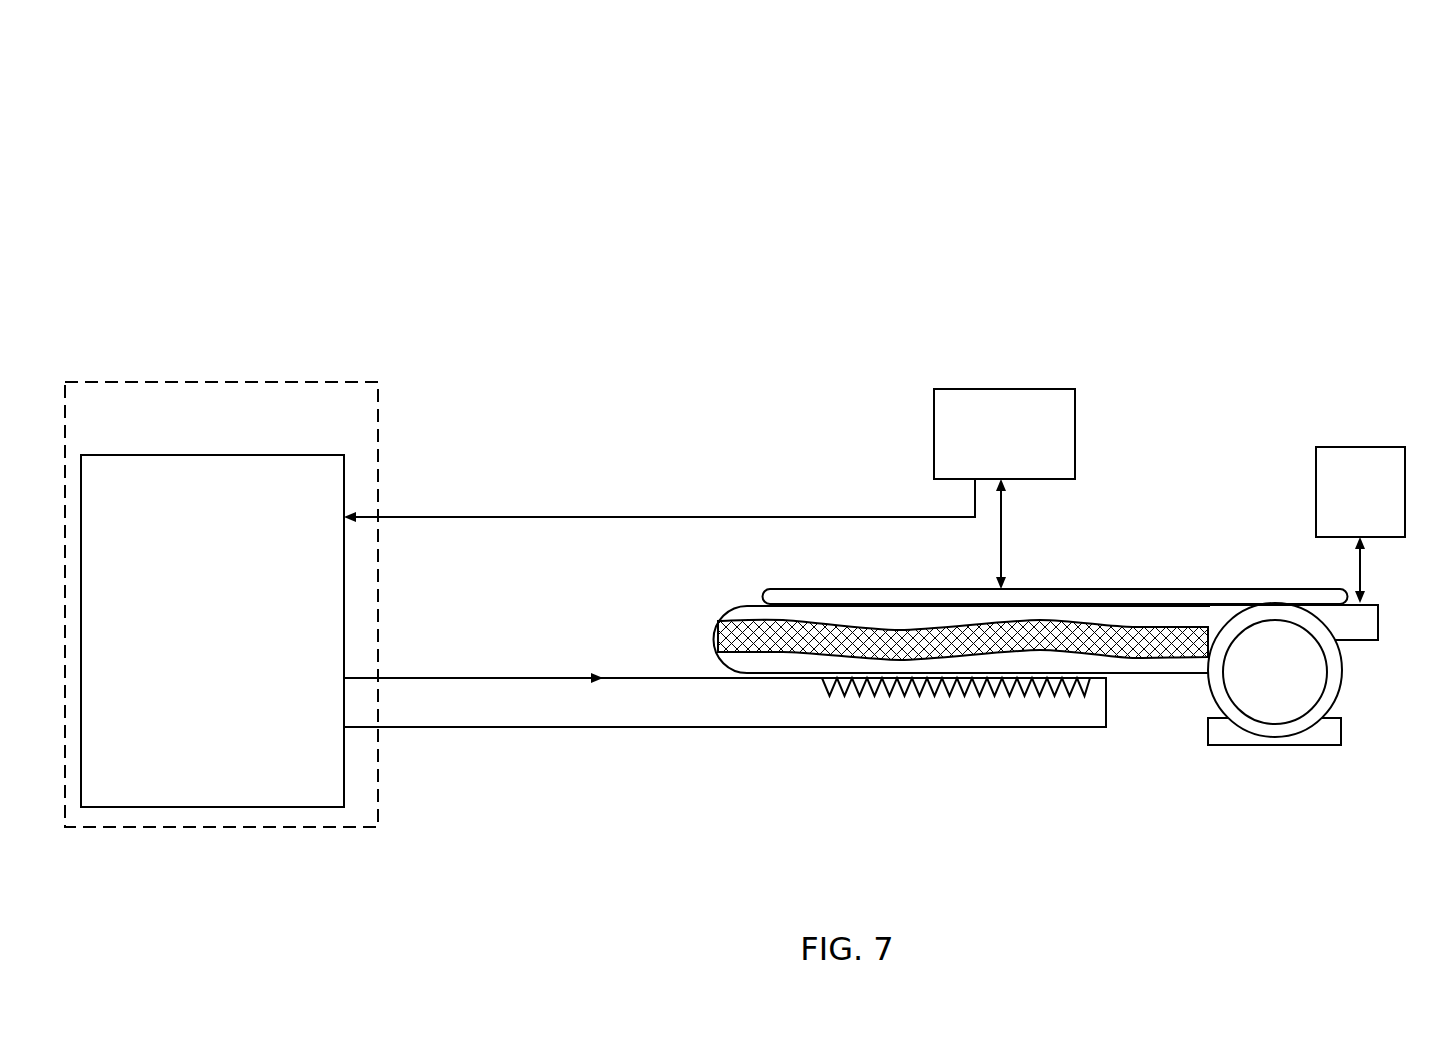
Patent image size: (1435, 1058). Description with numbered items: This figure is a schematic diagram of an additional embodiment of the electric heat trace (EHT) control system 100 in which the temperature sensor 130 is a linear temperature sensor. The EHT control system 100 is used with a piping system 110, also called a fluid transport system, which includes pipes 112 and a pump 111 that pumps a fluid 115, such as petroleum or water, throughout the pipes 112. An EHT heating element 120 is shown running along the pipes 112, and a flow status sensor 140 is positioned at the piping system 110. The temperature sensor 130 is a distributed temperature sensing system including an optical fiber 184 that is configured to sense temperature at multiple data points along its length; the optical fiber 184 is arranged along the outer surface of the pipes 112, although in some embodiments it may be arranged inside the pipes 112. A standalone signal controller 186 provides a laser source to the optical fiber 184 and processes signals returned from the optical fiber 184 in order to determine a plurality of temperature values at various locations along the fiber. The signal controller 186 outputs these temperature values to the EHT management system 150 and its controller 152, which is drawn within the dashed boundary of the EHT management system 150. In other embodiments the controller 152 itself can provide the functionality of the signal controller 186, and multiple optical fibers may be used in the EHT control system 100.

The EHT control system 100 is at (144, 75).
The piping system 110 is at (1180, 710).
The pump 111 is at (1354, 665).
The pipes 112 is at (728, 610).
The fluid 115 is at (1118, 657).
The EHT heating element 120 is at (641, 728).
The temperature sensor 130 is at (1119, 442).
The flow status sensor 140 is at (1316, 457).
The EHT management system 150 is at (378, 383).
The controller 152 is at (155, 455).
The optical fiber 184 is at (767, 589).
The signal controller 186 is at (934, 428).